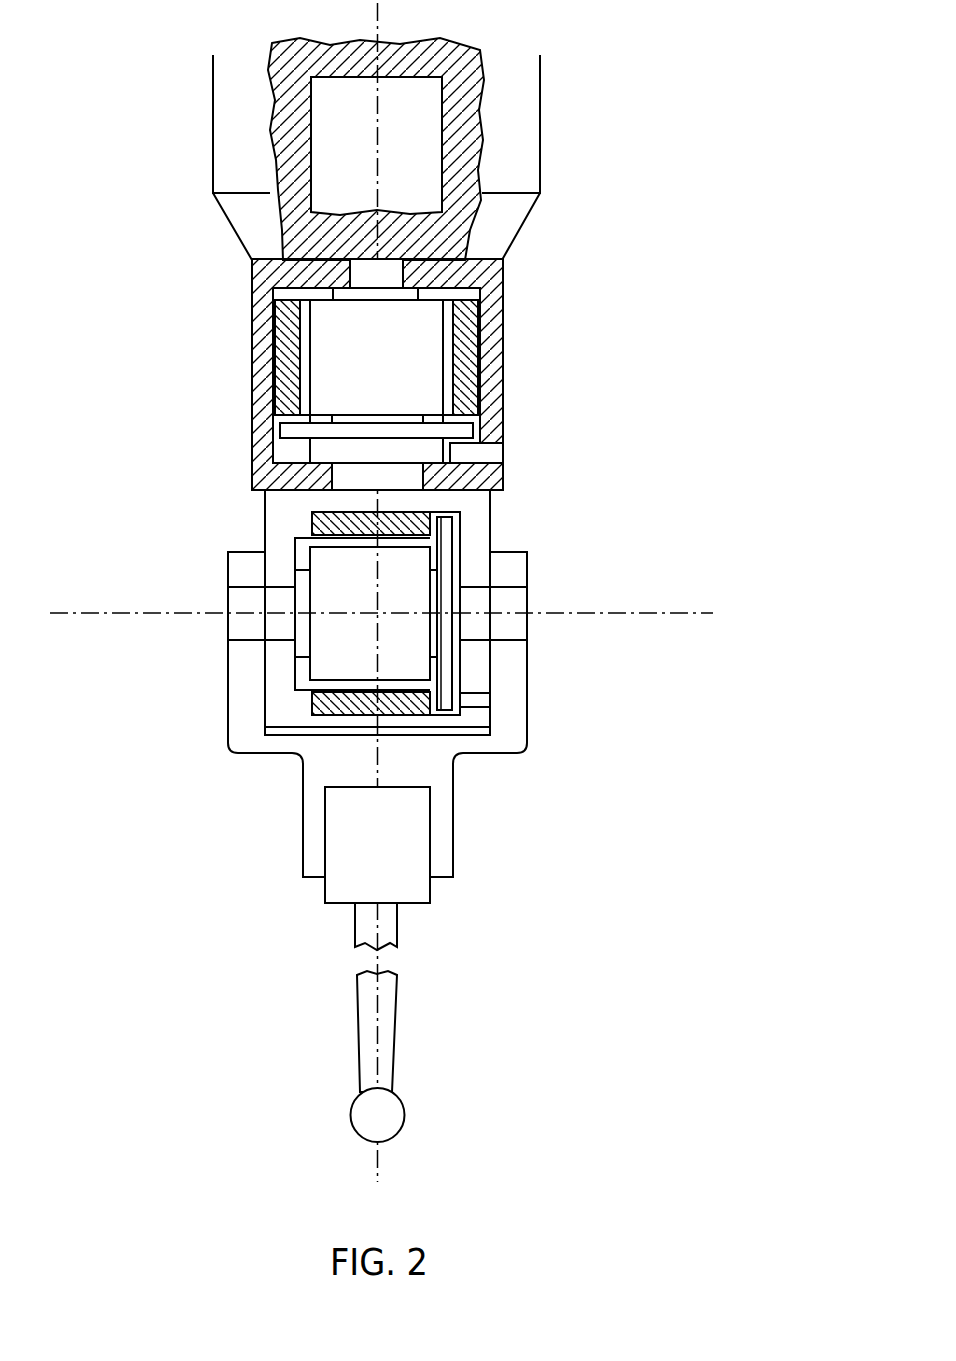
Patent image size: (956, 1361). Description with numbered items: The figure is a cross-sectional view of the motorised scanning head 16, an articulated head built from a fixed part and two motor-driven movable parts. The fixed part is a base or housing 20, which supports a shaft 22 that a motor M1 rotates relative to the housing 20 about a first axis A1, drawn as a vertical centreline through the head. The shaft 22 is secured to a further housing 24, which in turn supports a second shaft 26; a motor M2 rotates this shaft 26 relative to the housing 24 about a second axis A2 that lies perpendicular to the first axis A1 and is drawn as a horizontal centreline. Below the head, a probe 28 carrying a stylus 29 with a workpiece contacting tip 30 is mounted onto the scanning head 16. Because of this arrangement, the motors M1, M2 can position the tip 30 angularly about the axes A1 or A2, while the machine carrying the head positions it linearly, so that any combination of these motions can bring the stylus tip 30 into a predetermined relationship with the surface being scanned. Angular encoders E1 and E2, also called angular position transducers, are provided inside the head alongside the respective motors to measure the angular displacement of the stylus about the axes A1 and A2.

The motorised scanning head 16 is at (399, 612).
The housing 20 is at (250, 367).
The shaft 22 is at (347, 478).
The further housing 24 is at (492, 522).
The shaft 26 is at (478, 640).
The probe 28 is at (431, 846).
The stylus 29 is at (393, 1042).
The workpiece contacting tip 30 is at (348, 1113).
The motor M1 is at (427, 367).
The angular encoder E1 is at (283, 431).
The motor M2 is at (333, 652).
The angular encoder E2 is at (447, 693).
The first axis A1 is at (378, 612).
The second axis A2 is at (399, 612).